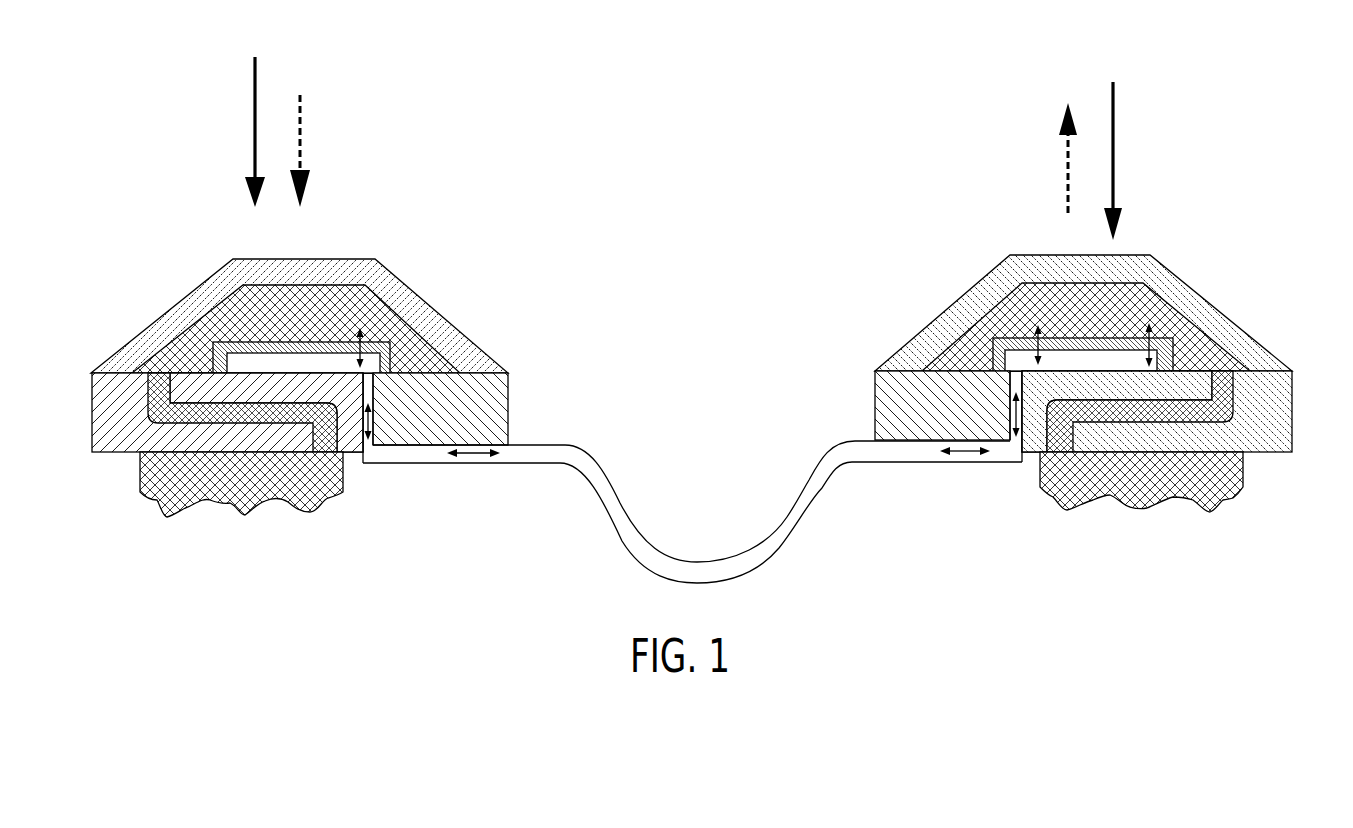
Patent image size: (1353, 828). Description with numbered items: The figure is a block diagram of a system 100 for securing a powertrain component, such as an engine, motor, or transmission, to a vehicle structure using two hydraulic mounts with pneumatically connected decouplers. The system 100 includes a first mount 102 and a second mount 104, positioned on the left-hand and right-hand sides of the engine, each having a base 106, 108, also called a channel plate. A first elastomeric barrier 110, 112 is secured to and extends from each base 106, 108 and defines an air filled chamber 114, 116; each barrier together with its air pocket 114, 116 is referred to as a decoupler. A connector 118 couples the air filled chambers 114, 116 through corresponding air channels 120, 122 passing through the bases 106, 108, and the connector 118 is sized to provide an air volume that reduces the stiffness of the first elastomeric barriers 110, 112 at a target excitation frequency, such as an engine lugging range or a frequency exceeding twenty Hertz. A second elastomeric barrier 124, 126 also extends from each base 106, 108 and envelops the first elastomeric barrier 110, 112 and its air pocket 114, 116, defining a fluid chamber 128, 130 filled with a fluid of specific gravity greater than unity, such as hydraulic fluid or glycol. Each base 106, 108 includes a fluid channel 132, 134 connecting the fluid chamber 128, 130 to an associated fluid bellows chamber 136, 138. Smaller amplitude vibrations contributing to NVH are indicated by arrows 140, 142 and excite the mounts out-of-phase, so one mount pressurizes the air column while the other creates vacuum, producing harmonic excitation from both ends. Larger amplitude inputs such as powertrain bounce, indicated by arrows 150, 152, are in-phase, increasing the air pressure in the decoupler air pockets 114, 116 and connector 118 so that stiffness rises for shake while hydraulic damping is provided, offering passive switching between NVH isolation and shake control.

The system 100 is at (696, 327).
The first mount 102 is at (311, 305).
The second mount 104 is at (1078, 312).
The base 106 is at (510, 403).
The base 108 is at (875, 392).
The first elastomeric barrier 110 is at (388, 350).
The first elastomeric barrier 112 is at (1000, 345).
The air filled chamber 114 is at (258, 365).
The air filled chamber 116 is at (1032, 350).
The connector 118 is at (696, 552).
The air channel 120 is at (365, 447).
The air channel 122 is at (1015, 442).
The second elastomeric barrier 124 is at (327, 262).
The second elastomeric barrier 126 is at (1148, 265).
The fluid chamber 128 is at (288, 300).
The fluid chamber 130 is at (1068, 300).
The fluid channel 132 is at (155, 413).
The fluid channel 134 is at (1223, 402).
The fluid bellows chamber 136 is at (230, 498).
The fluid bellows chamber 138 is at (1153, 485).
The arrow 140 is at (312, 146).
The arrow 142 is at (1055, 161).
The arrow 150 is at (246, 131).
The arrow 152 is at (1127, 178).